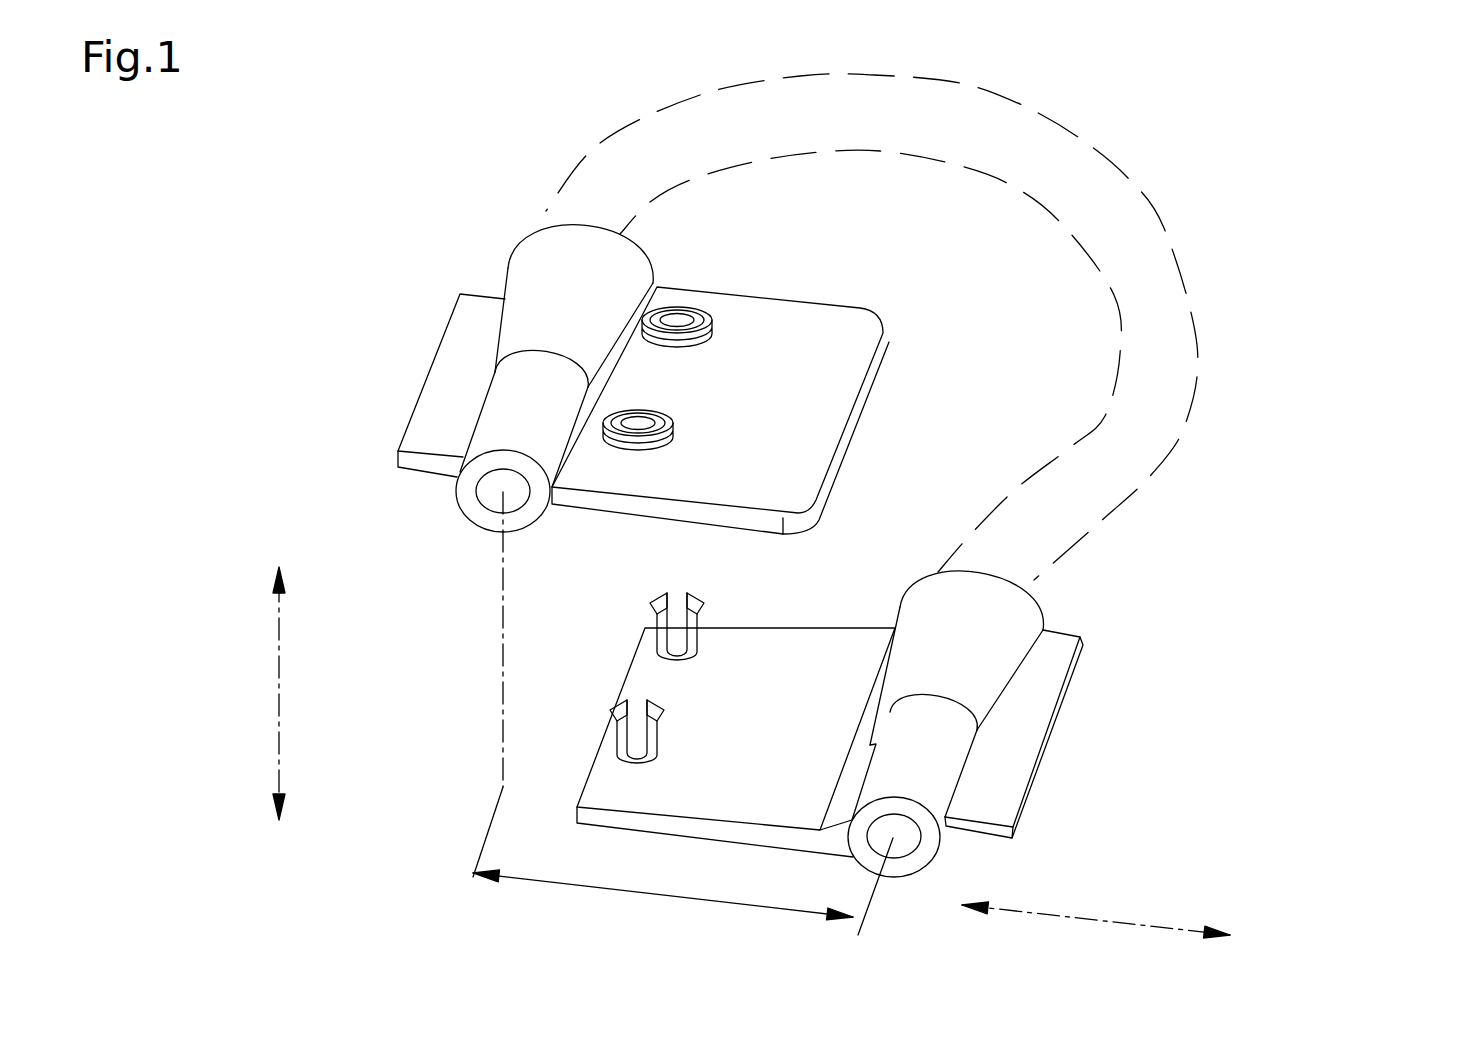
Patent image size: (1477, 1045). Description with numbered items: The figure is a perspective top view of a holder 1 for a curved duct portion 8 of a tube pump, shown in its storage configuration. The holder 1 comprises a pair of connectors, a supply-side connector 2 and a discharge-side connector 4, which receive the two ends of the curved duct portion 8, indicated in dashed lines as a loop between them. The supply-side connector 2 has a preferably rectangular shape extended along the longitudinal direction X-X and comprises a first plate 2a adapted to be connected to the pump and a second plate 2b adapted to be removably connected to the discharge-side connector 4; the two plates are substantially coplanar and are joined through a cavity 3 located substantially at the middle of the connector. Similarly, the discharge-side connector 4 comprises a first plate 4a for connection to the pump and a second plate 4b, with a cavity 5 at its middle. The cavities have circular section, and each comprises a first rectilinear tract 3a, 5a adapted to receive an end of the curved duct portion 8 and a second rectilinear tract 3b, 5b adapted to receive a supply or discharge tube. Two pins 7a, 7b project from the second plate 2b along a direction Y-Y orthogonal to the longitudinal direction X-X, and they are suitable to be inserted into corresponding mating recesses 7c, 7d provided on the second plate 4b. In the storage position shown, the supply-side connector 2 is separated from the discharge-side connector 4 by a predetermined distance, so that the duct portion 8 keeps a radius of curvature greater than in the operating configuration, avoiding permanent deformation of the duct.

The holder 1 is at (1392, 158).
The supply-side connector 2 is at (1037, 695).
The first plate 2a is at (1020, 740).
The second plate 2b is at (812, 790).
The cavity 3 is at (855, 855).
The first rectilinear tract 3a is at (913, 768).
The second rectilinear tract 3b is at (965, 640).
The discharge-side connector 4 is at (385, 400).
The first plate 4a is at (446, 365).
The second plate 4b is at (847, 356).
The cavity 5 is at (528, 541).
The first rectilinear tract 5a is at (485, 447).
The second rectilinear tract 5b is at (546, 285).
The pin 7a is at (618, 745).
The pin 7b is at (666, 627).
The mating recess 7c is at (655, 400).
The mating recess 7d is at (670, 727).
The curved duct portion 8 is at (1088, 186).